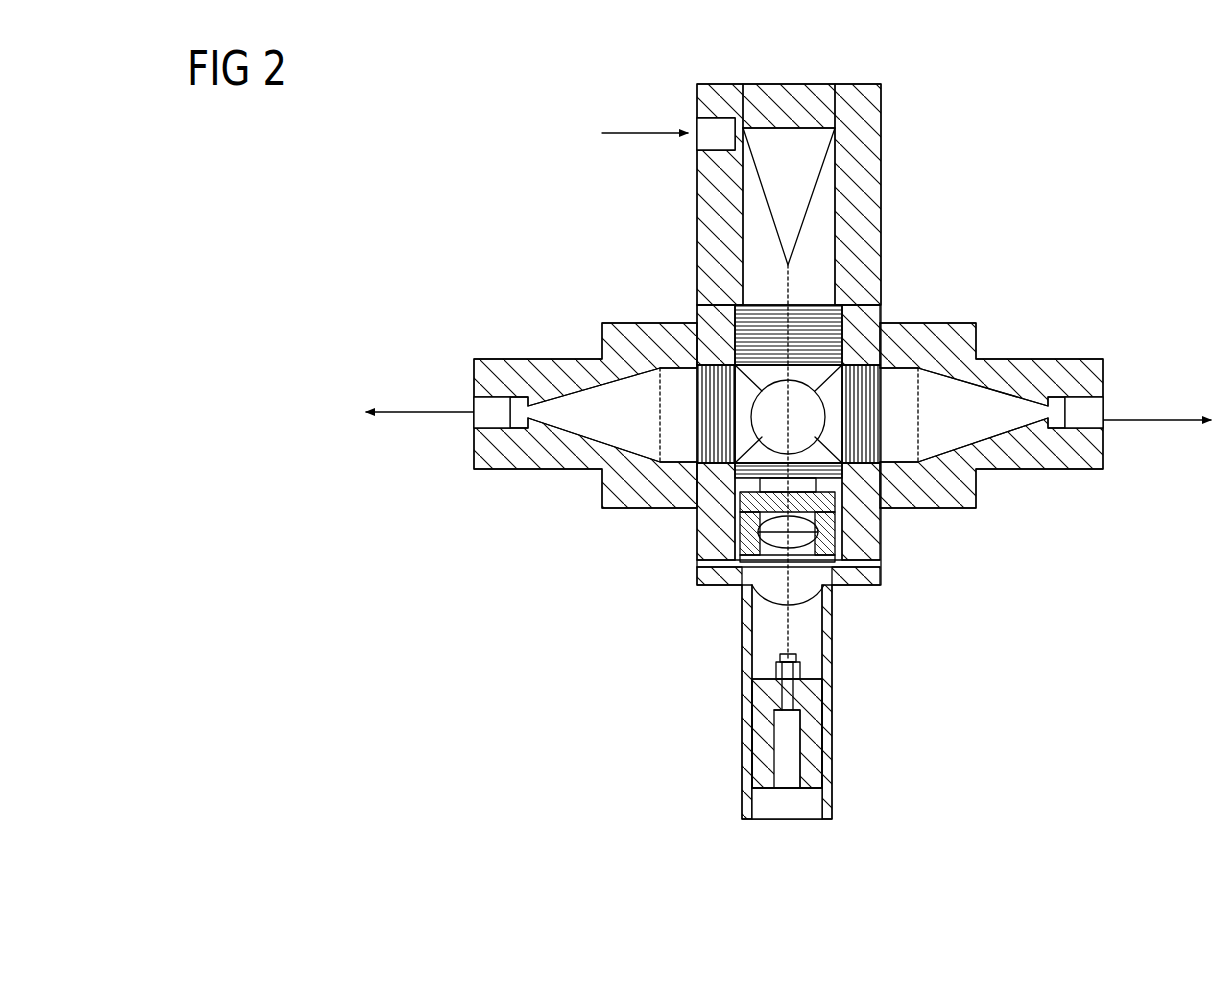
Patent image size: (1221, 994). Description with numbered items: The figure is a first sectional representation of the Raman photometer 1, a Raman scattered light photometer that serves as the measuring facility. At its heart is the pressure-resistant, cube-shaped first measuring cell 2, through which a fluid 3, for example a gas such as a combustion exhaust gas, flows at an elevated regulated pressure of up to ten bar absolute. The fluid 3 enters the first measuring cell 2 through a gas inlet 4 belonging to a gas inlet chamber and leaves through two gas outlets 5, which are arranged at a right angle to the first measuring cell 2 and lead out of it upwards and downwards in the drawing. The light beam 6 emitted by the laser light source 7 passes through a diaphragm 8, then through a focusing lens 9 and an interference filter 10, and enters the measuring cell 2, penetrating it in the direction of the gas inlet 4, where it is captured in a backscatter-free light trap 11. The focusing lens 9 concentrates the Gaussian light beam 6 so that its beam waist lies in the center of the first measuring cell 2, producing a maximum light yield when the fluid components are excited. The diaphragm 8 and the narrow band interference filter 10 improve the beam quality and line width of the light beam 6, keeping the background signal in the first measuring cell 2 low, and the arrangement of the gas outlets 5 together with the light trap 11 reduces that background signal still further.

The Raman photometer 1 is at (482, 214).
The first measuring cell 2 is at (706, 318).
The fluid 3 is at (634, 133).
The gas inlet 4 is at (710, 138).
The gas outlets 5 is at (490, 418).
The light beam 6 is at (793, 621).
The laser light source 7 is at (762, 777).
The diaphragm 8 is at (744, 592).
The focusing lens 9 is at (835, 592).
The interference filter 10 is at (845, 506).
The light trap 11 is at (800, 240).